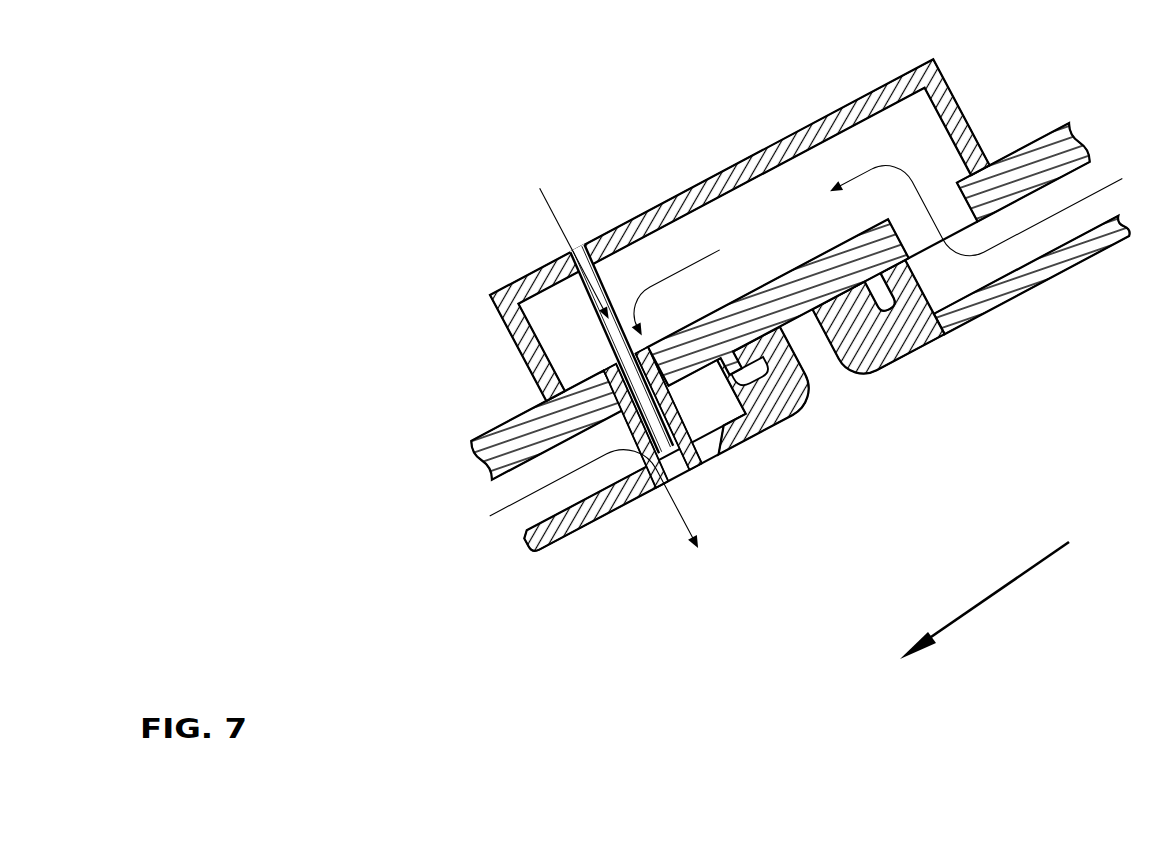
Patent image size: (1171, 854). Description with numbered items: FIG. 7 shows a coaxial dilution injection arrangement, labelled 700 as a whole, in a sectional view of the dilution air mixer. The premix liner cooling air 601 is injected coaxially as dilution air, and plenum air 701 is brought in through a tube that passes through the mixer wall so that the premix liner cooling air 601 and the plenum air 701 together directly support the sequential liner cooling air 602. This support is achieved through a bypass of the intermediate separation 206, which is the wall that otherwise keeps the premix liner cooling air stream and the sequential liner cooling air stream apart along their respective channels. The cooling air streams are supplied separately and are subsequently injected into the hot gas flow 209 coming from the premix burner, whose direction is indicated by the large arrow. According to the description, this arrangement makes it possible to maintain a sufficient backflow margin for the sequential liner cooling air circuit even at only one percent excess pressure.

The probe housing assembly 700 is at (752, 132).
The plenum air 701 is at (550, 215).
The premix liner cooling air 601 is at (1050, 223).
The sequential liner cooling air 602 is at (577, 475).
The intermediate separation 206 is at (826, 369).
The hot gas flow 209 is at (1003, 593).